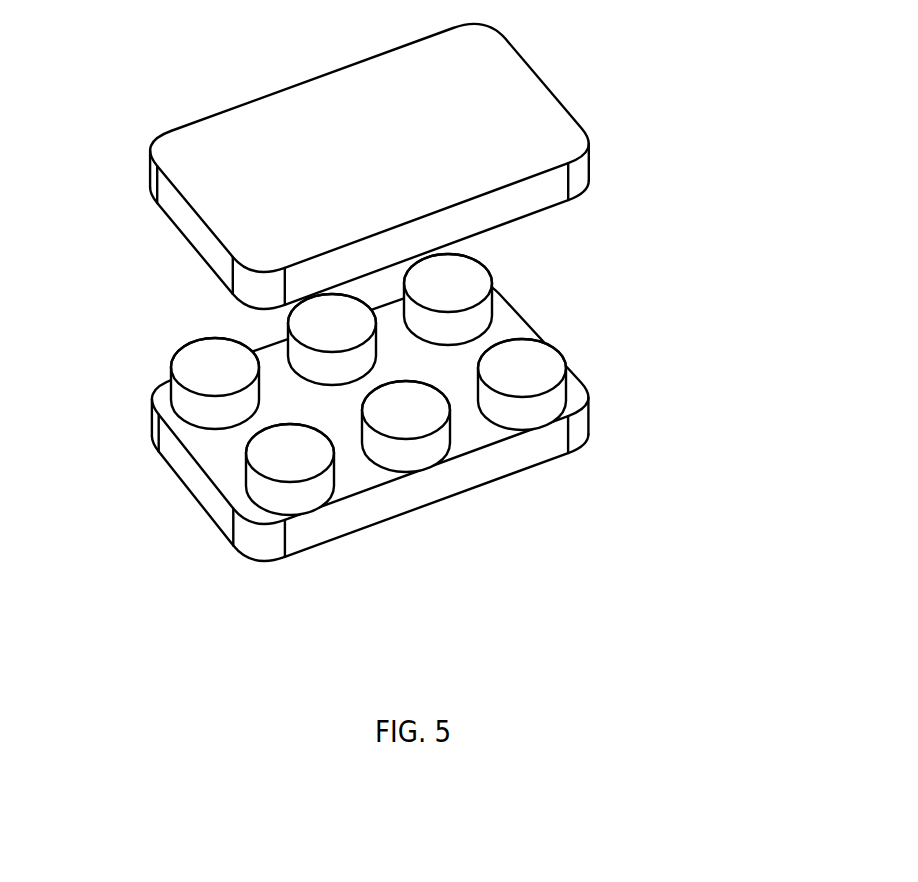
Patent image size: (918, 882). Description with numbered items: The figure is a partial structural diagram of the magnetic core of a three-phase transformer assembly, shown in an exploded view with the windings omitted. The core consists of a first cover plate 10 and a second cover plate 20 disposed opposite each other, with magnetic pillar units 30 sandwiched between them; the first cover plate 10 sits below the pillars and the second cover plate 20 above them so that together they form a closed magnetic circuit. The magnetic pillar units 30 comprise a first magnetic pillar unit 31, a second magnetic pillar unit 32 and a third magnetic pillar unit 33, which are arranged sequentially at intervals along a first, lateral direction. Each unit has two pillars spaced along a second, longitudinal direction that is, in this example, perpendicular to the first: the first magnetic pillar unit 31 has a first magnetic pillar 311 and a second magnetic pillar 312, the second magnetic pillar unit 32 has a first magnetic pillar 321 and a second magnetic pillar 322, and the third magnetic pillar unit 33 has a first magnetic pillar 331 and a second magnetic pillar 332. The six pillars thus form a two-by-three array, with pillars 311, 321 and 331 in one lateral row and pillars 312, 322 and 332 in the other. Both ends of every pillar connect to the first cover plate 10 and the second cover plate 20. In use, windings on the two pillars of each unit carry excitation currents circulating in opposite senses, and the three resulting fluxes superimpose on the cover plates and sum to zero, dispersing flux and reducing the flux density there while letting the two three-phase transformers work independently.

The first cover plate 10 is at (507, 458).
The second cover plate 20 is at (487, 68).
The magnetic pillar units 30 is at (410, 430).
The first magnetic pillar unit 31 is at (172, 506).
The second magnetic pillar unit 32 is at (390, 474).
The third magnetic pillar unit 33 is at (571, 308).
The first magnetic pillar 311 is at (291, 537).
The second magnetic pillar 312 is at (197, 401).
The first magnetic pillar 321 is at (403, 422).
The second magnetic pillar 322 is at (317, 360).
The first magnetic pillar 331 is at (528, 365).
The second magnetic pillar 332 is at (477, 278).